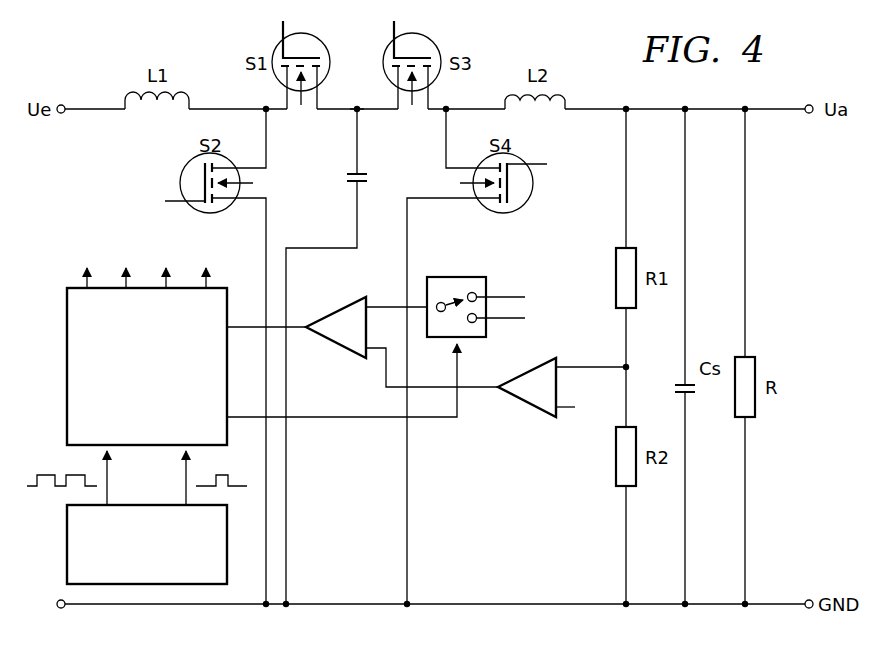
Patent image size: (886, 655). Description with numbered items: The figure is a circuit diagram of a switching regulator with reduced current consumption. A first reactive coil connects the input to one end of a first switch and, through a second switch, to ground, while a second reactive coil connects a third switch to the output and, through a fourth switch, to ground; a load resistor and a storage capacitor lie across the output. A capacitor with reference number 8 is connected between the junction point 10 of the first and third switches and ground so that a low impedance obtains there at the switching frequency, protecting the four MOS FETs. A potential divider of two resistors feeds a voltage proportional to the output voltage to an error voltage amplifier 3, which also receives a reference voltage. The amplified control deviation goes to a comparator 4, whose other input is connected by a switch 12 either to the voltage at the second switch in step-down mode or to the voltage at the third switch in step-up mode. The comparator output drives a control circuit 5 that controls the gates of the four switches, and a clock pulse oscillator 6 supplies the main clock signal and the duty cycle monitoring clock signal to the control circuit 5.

The error voltage amplifier 3 is at (526, 405).
The comparator 4 is at (337, 310).
The control circuit 5 is at (67, 365).
The clock pulse oscillator 6 is at (67, 547).
The capacitor 8 is at (345, 178).
The junction point 10 is at (358, 112).
The switch 12 is at (458, 277).